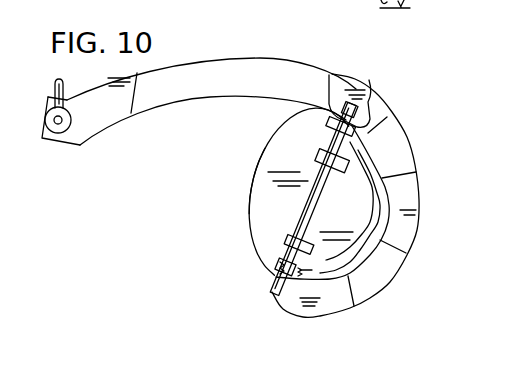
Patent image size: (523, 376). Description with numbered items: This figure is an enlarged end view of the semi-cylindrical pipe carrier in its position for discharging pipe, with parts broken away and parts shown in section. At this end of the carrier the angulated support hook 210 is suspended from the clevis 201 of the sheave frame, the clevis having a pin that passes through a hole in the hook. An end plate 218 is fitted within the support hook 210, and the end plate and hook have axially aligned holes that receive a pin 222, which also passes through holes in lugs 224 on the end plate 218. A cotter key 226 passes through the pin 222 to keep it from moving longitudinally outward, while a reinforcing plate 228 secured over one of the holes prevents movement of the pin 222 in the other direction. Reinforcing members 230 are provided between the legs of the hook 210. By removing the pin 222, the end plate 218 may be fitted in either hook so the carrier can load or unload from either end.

The clevis 201 is at (60, 86).
The support hook 210 is at (100, 124).
The end plate 218 is at (252, 236).
The pin 222 is at (312, 202).
The lugs 224 is at (320, 150).
The cotter key 226 is at (266, 276).
The reinforcing plate 228 is at (302, 73).
The reinforcing members 230 is at (422, 176).